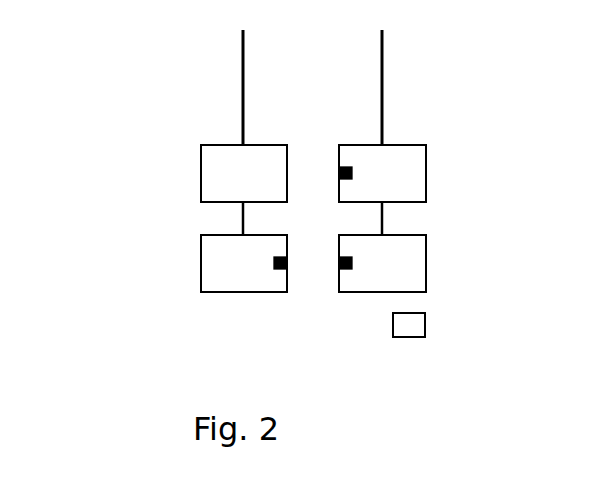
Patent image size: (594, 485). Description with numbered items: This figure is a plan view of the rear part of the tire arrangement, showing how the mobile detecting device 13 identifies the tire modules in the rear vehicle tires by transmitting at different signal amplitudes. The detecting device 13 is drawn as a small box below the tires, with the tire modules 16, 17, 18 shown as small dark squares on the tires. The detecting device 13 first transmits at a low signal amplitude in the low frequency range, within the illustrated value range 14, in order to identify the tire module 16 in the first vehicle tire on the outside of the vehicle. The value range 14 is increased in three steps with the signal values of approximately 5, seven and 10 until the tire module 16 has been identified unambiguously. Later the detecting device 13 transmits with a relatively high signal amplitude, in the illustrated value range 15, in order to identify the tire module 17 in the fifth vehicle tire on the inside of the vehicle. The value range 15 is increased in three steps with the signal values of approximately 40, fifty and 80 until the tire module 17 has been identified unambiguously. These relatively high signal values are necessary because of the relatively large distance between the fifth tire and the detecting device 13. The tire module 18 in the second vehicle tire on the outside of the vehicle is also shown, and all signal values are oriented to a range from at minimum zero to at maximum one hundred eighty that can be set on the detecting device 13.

The signal value 5 is at (185, 212).
The signal value 10 is at (244, 263).
The mobile detecting device 13 is at (413, 337).
The value range 14 is at (180, 194).
The value range 15 is at (451, 161).
The tire module 16 is at (339, 263).
The tire module 17 is at (339, 172).
The tire module 18 is at (288, 263).
The signal value 40 is at (446, 173).
The signal value 80 is at (382, 263).